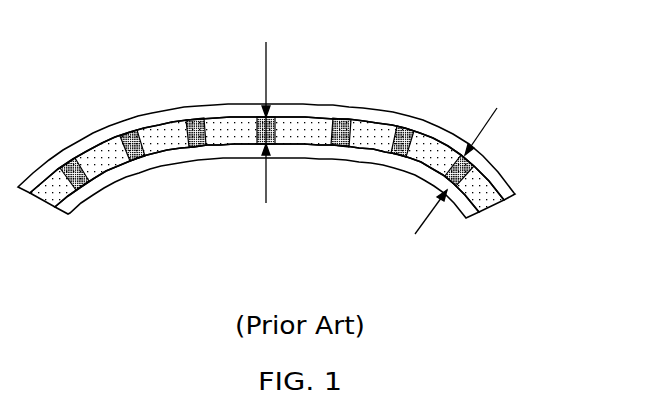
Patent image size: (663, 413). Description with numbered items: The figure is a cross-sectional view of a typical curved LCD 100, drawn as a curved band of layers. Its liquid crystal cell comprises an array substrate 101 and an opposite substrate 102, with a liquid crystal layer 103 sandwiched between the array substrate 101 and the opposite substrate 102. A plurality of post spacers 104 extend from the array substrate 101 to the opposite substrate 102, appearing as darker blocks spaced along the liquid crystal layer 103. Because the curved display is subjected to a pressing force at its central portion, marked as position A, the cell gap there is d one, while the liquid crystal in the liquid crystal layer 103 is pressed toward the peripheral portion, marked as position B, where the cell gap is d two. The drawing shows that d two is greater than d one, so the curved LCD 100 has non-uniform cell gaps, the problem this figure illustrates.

The curved LCD 100 is at (296, 150).
The array substrate 101 is at (498, 178).
The opposite substrate 102 is at (458, 217).
The liquid crystal layer 103 is at (472, 200).
The post spacers 104 is at (343, 121).